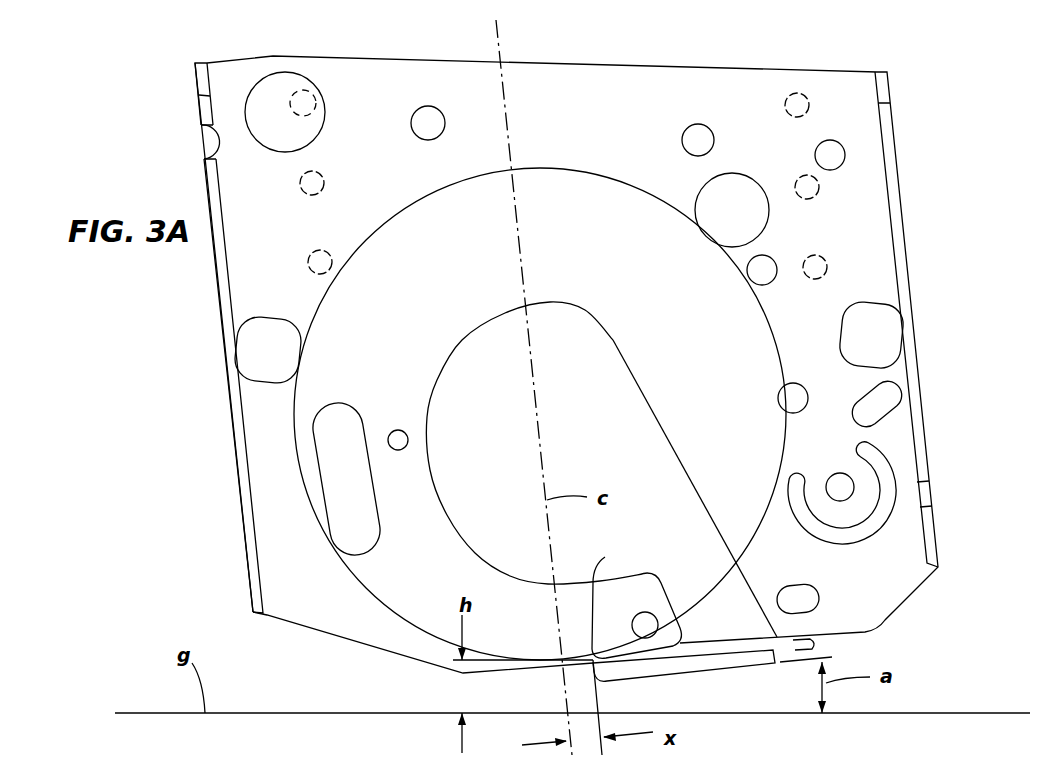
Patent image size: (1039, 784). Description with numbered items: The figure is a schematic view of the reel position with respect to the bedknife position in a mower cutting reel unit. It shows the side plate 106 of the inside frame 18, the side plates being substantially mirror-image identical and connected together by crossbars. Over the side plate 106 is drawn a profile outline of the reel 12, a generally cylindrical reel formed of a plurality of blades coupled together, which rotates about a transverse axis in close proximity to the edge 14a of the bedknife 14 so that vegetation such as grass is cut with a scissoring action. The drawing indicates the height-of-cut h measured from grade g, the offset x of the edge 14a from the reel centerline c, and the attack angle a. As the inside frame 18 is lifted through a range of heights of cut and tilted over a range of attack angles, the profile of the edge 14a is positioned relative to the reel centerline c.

The reel 12 is at (403, 623).
The bedknife 14 is at (690, 668).
The edge of bedknife 14a is at (636, 645).
The inside frame 18 is at (900, 171).
The side plate 106 is at (907, 260).